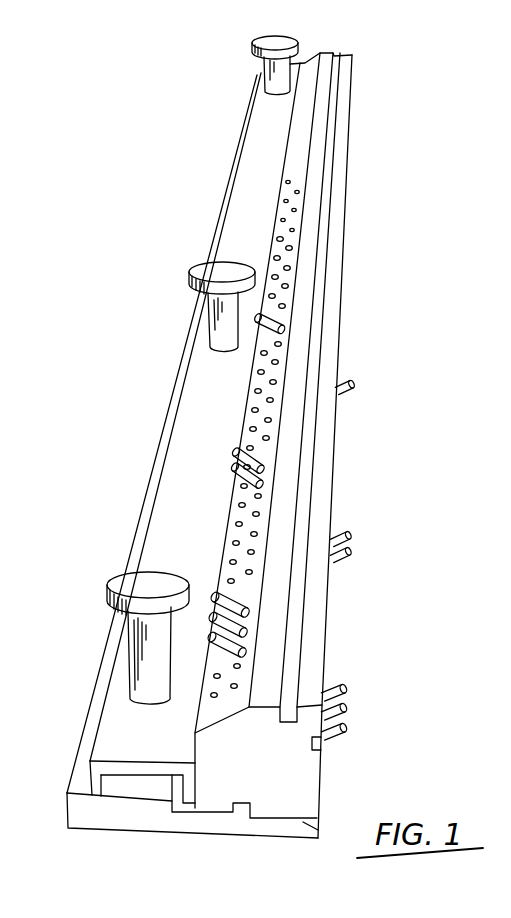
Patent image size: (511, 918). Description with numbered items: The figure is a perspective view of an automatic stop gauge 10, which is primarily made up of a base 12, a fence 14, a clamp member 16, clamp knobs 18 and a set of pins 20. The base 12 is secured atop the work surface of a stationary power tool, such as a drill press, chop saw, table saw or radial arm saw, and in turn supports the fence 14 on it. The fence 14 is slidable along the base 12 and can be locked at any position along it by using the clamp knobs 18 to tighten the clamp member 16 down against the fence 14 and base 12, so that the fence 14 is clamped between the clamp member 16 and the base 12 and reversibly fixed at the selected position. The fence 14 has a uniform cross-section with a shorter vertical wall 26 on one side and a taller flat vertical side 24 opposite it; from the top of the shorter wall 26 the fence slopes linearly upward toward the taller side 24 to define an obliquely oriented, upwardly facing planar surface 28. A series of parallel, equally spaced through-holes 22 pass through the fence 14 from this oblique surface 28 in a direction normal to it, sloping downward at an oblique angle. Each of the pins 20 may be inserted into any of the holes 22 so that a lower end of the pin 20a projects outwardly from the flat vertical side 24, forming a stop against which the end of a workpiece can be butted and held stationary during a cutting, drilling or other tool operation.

The automatic stop gauge 10 is at (414, 145).
The base 12 is at (119, 828).
The fence 14 is at (276, 803).
The clamp member 16 is at (199, 394).
The clamp knobs 18 is at (193, 257).
The pins 20 is at (228, 455).
The lower end of the pin 20a is at (345, 706).
The through-holes 22 is at (233, 567).
The flat vertical side 24 is at (323, 768).
The shorter vertical wall 26 is at (193, 744).
The obliquely oriented upwardly facing planar surface 28 is at (238, 690).